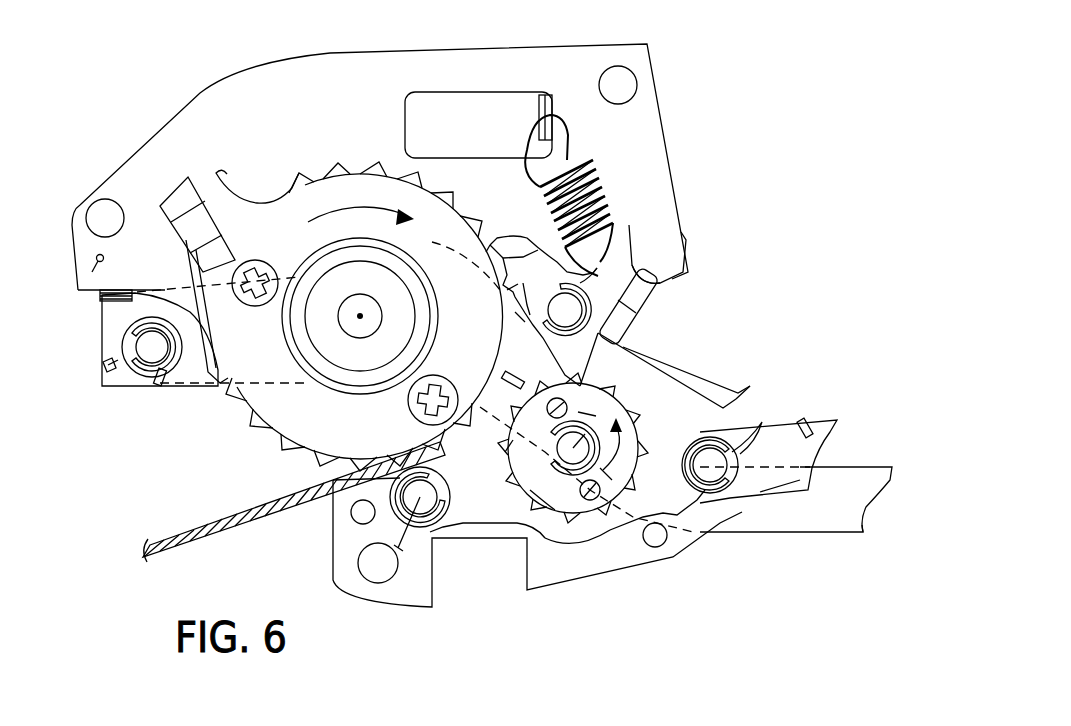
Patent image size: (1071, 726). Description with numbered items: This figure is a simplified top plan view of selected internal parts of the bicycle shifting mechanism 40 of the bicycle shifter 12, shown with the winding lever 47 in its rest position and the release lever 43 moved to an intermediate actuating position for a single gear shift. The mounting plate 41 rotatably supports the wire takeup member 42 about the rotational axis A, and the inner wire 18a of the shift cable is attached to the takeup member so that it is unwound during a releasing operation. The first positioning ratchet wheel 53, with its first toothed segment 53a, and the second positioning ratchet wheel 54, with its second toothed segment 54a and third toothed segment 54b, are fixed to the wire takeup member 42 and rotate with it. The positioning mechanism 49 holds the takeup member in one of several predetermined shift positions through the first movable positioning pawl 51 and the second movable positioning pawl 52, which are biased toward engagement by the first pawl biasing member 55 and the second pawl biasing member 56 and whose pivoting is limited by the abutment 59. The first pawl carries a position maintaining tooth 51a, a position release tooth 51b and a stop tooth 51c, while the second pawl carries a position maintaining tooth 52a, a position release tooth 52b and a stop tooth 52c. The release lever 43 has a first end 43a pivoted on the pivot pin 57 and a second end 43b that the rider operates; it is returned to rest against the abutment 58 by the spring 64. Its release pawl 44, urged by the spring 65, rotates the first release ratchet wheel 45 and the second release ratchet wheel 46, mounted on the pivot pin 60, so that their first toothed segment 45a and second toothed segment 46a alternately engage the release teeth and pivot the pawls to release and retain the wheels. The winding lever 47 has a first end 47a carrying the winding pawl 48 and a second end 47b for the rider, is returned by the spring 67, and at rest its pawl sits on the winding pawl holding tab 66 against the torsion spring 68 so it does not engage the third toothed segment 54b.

The bicycle shifter 12 is at (719, 73).
The inner wire 18a is at (170, 535).
The bicycle shifting mechanism 40 is at (247, 446).
The mounting plate 41 is at (643, 194).
The wire takeup member 42 is at (182, 194).
The release lever 43 is at (815, 430).
The first end 43a is at (466, 525).
The second end 43b is at (790, 478).
The release pawl 44 is at (720, 409).
The first release ratchet wheel 45 is at (557, 497).
The first toothed segment 45a is at (512, 441).
The second release ratchet wheel 46 is at (603, 470).
The second toothed segment 46a is at (596, 416).
The winding lever 47 is at (847, 480).
The first end 47a is at (113, 381).
The second end 47b is at (832, 522).
The winding pawl 48 is at (177, 388).
The positioning mechanism 49 is at (515, 206).
The first movable positioning pawl 51 is at (625, 300).
The position maintaining tooth 51a is at (503, 291).
The position release tooth 51b is at (510, 335).
The stop tooth 51c is at (630, 338).
The second movable positioning pawl 52 is at (650, 250).
The position maintaining tooth 52a is at (488, 248).
The position release tooth 52b is at (510, 363).
The stop tooth 52c is at (640, 367).
The first positioning ratchet wheel 53 is at (331, 196).
The first toothed segment 53a is at (467, 212).
The second positioning ratchet wheel 54 is at (348, 165).
The second toothed segment 54a is at (425, 186).
The third toothed segment 54b is at (285, 455).
The first pawl biasing member 55 is at (582, 172).
The second pawl biasing member 56 is at (650, 236).
The pivot pin 57 is at (342, 538).
The abutment 58 is at (662, 547).
The abutment 59 is at (633, 318).
The pivot pin 60 is at (522, 491).
The spring 64 is at (397, 560).
The spring 65 is at (748, 445).
The winding pawl holding tab 66 is at (233, 388).
The spring 67 is at (100, 302).
The torsion spring 68 is at (97, 356).
The rotational axis A is at (360, 316).